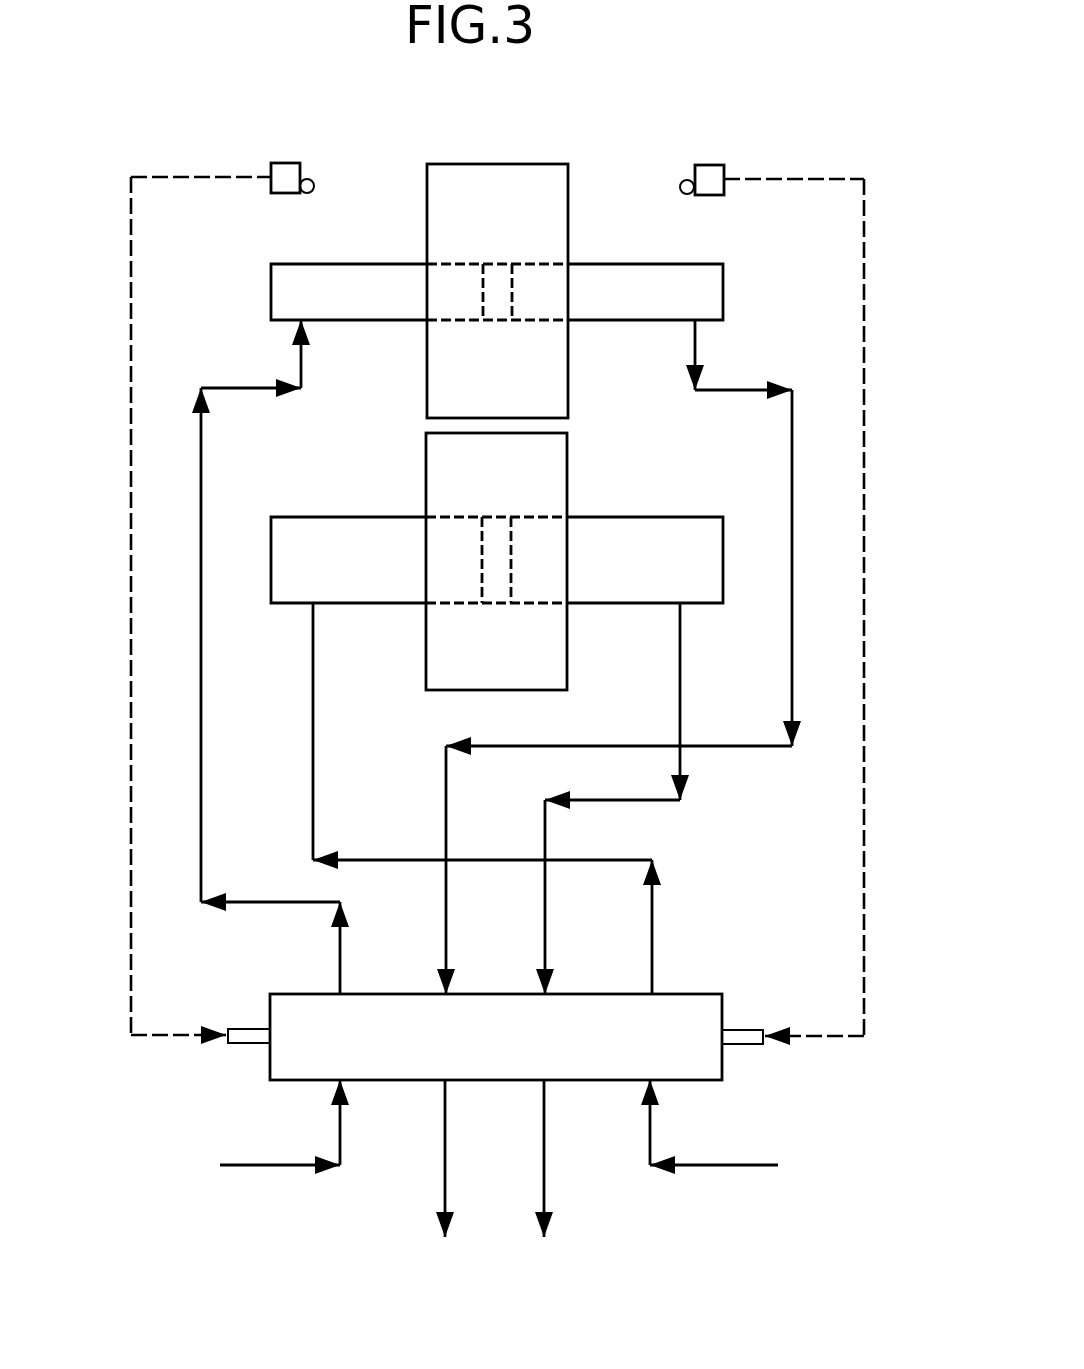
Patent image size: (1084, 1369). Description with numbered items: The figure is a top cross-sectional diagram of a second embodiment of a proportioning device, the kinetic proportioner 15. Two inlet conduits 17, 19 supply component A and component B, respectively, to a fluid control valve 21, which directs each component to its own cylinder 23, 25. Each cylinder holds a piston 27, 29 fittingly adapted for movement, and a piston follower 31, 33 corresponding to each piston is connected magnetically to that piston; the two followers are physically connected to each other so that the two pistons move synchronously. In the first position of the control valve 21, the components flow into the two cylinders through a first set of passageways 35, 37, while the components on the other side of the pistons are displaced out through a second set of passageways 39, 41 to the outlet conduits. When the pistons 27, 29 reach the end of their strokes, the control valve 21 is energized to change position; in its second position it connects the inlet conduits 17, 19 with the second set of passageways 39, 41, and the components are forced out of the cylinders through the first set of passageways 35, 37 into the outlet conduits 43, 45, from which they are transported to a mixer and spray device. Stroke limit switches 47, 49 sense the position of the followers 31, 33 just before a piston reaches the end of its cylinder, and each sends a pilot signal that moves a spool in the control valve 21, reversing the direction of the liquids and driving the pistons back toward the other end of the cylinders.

The kinetic proportioner 15 is at (860, 143).
The conduit 17 is at (267, 1167).
The conduit 19 is at (700, 1167).
The fluid control valve 21 is at (688, 993).
The cylinder 23 is at (307, 516).
The cylinder 25 is at (303, 262).
The piston 27 is at (492, 262).
The piston 29 is at (496, 604).
The piston follower 31 is at (427, 343).
The piston follower 33 is at (426, 460).
The first passageway 35 is at (311, 745).
The first passageway 37 is at (197, 795).
The second passageway 39 is at (795, 633).
The second passageway 41 is at (685, 795).
The outlet conduit 43 is at (443, 1200).
The outlet conduit 45 is at (548, 1200).
The stroke limit switch 47 is at (288, 163).
The stroke limit switch 49 is at (710, 165).